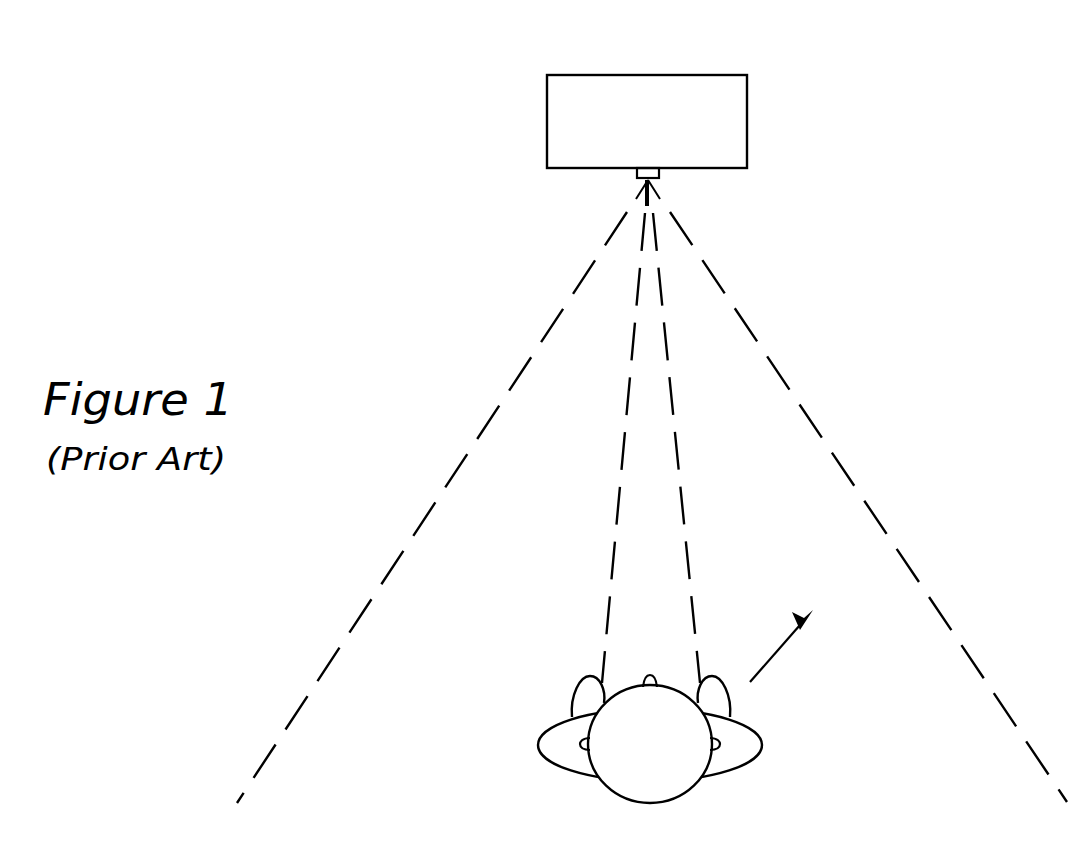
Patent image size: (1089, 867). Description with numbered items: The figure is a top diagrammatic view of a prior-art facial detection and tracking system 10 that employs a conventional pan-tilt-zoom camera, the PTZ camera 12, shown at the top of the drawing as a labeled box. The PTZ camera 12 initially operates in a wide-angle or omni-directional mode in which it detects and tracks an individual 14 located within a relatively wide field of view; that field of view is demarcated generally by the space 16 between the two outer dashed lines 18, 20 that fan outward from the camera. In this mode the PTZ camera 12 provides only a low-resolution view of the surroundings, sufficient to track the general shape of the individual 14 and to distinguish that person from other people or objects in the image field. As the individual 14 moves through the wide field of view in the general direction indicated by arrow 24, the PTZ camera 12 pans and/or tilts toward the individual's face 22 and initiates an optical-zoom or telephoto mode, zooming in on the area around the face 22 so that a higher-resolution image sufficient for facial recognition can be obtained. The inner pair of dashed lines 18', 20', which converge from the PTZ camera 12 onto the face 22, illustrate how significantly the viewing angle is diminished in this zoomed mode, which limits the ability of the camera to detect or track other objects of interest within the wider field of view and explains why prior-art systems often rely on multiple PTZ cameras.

The facial detection and tracking system 10 is at (946, 244).
The PTZ camera 12 is at (715, 90).
The individual 14 is at (733, 762).
The space 16 is at (735, 504).
The dashed line 18 is at (432, 507).
The dashed line 20 is at (868, 507).
The dashed line 18' is at (591, 448).
The dashed line 20' is at (705, 448).
The face 22 is at (628, 683).
The arrow 24 is at (777, 653).